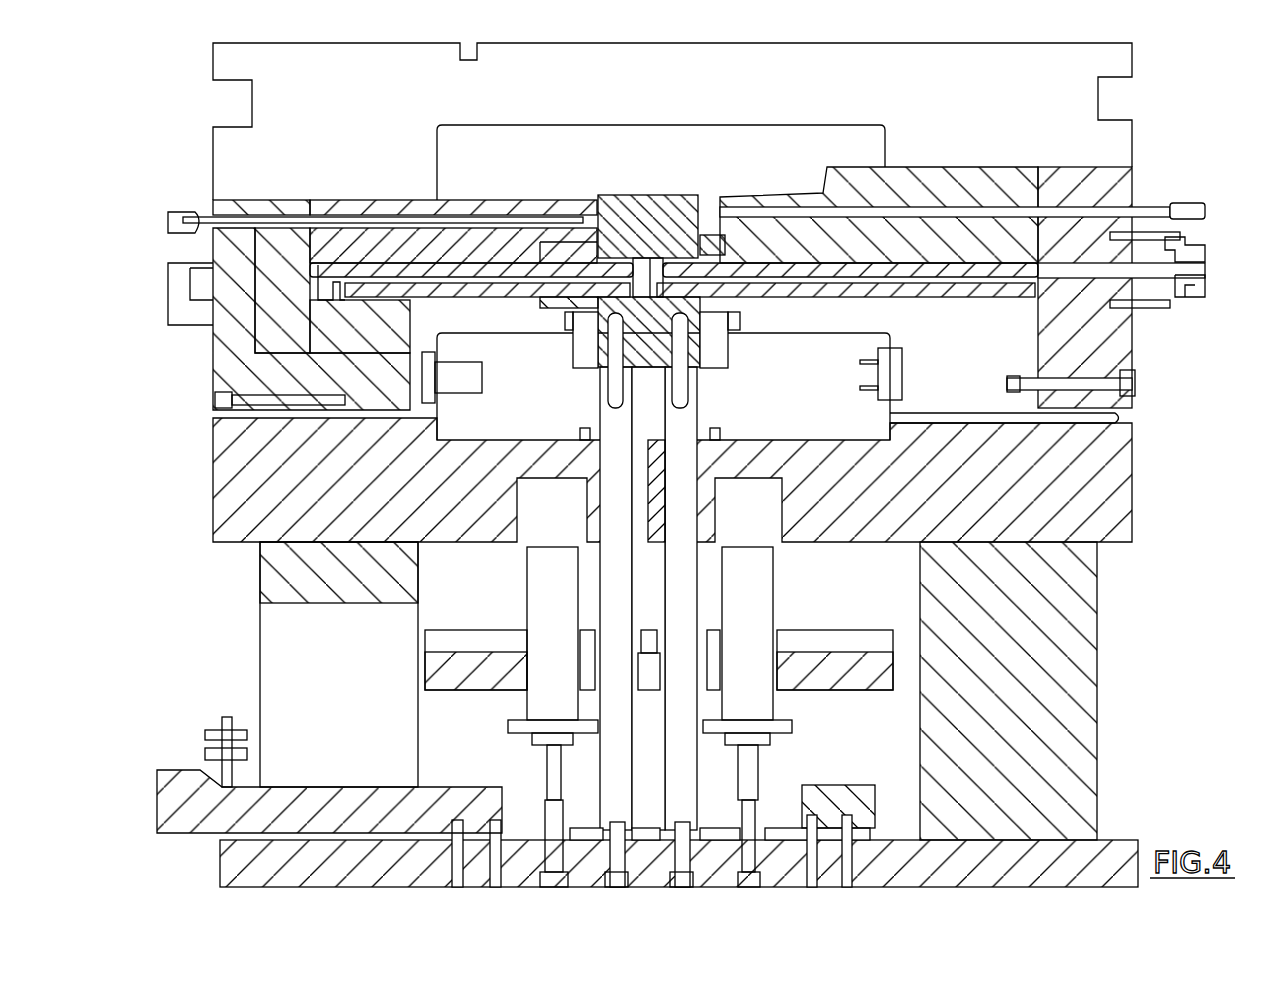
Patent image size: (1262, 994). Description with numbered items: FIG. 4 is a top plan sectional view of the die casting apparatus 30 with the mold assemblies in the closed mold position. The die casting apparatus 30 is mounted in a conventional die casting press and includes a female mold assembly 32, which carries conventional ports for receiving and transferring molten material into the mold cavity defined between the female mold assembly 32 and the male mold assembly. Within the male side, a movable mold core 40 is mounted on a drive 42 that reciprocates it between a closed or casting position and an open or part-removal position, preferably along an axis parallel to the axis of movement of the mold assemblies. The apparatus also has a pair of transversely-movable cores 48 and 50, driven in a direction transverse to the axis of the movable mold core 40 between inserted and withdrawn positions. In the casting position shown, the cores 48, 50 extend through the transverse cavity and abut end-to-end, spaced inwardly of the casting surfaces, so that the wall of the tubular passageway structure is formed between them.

The die casting apparatus 30 is at (208, 452).
The female mold assembly 32 is at (654, 171).
The movable mold core 40 is at (648, 328).
The drive 42 is at (612, 572).
The transversely-movable core 48 is at (958, 290).
The transversely-movable core 50 is at (415, 294).